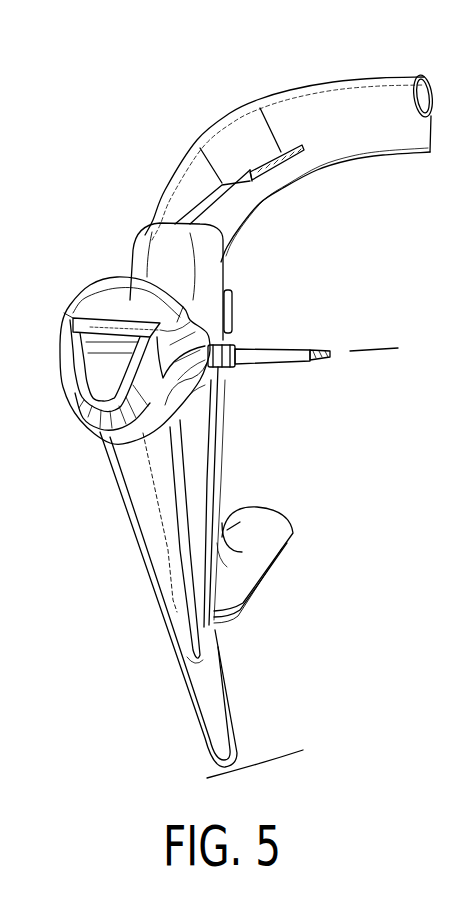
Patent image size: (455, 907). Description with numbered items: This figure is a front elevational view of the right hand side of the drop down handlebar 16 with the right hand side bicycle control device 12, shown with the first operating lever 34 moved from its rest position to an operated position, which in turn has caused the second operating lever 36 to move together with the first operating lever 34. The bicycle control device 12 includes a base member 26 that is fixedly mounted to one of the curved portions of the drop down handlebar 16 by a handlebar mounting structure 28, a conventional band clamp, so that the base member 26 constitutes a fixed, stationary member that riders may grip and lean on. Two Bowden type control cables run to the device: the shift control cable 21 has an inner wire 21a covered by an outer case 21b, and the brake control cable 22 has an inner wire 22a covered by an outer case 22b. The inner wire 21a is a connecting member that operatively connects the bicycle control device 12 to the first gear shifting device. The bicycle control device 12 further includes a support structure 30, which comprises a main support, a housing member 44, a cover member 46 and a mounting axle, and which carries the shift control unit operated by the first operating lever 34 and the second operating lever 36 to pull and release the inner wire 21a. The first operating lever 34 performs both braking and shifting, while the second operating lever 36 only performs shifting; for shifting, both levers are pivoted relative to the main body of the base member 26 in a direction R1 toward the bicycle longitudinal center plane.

The bicycle control device 12 is at (124, 372).
The drop down handlebar 16 is at (325, 72).
The shift control cable 21 is at (311, 417).
The inner wire 21a is at (355, 392).
The outer case 21b is at (277, 365).
The brake control cable 22 is at (215, 132).
The inner wire 22a is at (254, 120).
The outer case 22b is at (200, 148).
The base member 26 is at (125, 235).
The handlebar mounting structure 28 is at (242, 299).
The support structure 30 is at (53, 408).
The first operating lever 34 is at (248, 697).
The second operating lever 36 is at (220, 637).
The housing member 44 is at (108, 432).
The cover member 46 is at (100, 378).
The direction R1 is at (270, 765).